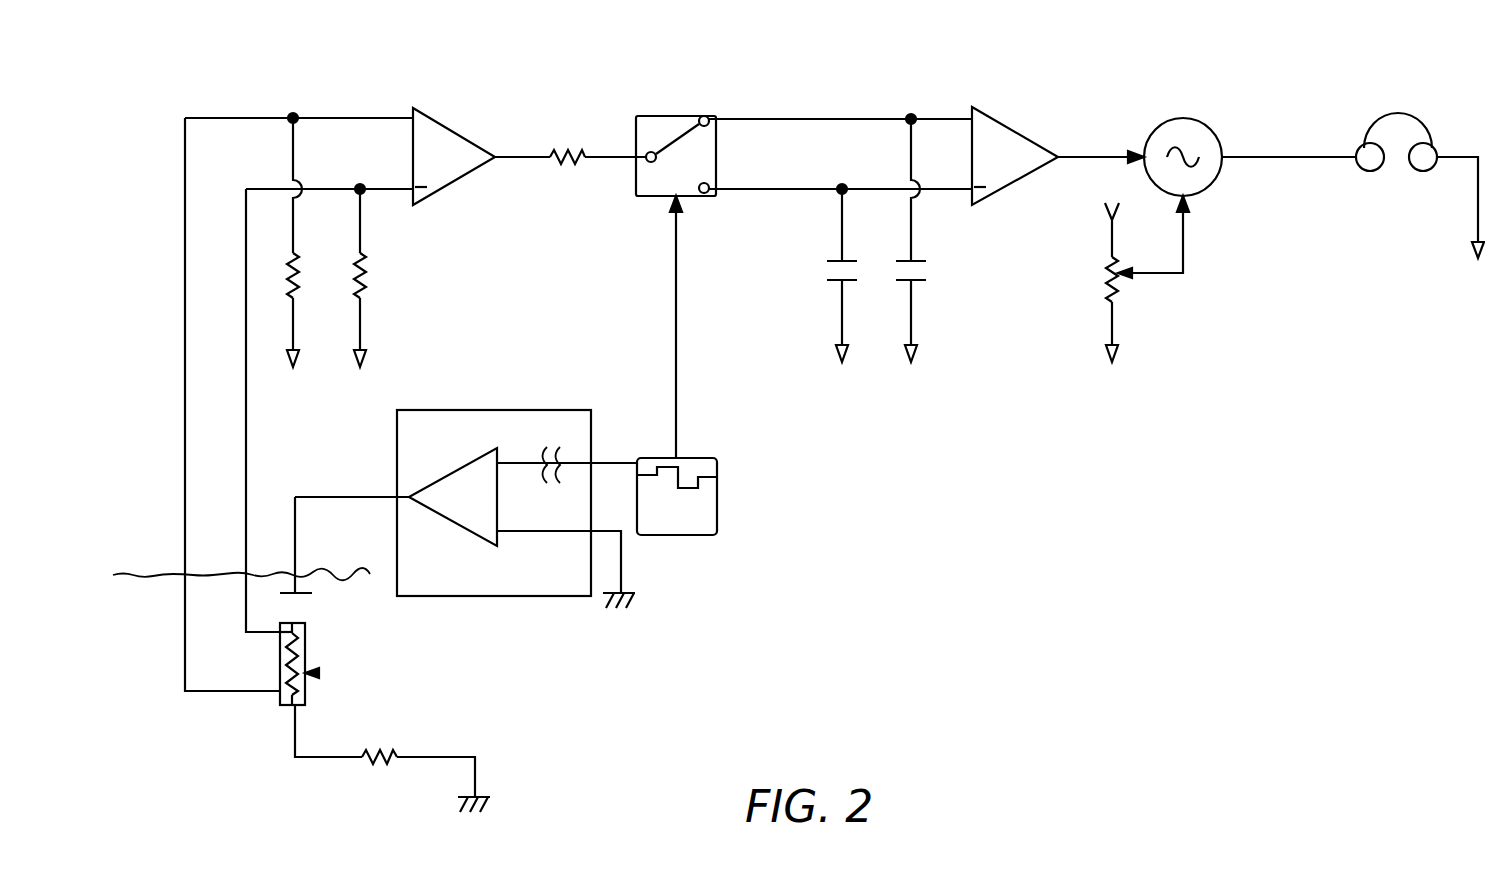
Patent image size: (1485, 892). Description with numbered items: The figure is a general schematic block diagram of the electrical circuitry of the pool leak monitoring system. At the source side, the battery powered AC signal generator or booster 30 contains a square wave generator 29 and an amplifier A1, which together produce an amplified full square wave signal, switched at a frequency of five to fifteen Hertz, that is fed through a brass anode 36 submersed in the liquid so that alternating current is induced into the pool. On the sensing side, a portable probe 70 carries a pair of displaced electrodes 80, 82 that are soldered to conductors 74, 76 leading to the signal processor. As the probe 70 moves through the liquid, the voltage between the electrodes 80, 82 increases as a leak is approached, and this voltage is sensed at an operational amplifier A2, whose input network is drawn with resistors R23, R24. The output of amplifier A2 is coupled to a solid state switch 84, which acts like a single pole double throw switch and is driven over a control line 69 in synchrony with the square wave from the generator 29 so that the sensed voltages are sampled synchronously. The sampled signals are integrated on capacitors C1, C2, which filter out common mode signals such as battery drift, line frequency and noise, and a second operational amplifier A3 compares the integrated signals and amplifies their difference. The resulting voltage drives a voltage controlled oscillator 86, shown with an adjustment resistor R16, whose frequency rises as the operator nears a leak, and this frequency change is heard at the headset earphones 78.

The solid state switch 84 is at (685, 114).
The voltage controlled oscillator 86 is at (1188, 118).
The headset earphones 78 is at (1412, 117).
The control line 69 is at (675, 297).
The signal generator or booster 30 is at (517, 477).
The square wave generator 29 is at (717, 490).
The conductor 74 is at (250, 424).
The brass anode 36 is at (302, 596).
The conductor 76 is at (185, 657).
The electrode 80 is at (283, 632).
The probe 70 is at (319, 673).
The electrode 82 is at (288, 708).
The amplifier A1 is at (453, 497).
The operational amplifier A2 is at (453, 156).
The second operational amplifier A3 is at (1014, 156).
The resistor R23 is at (318, 242).
The resistor R24 is at (385, 278).
The variable resistor R16 is at (1084, 282).
The capacitor C1 is at (821, 275).
The capacitor C2 is at (928, 240).